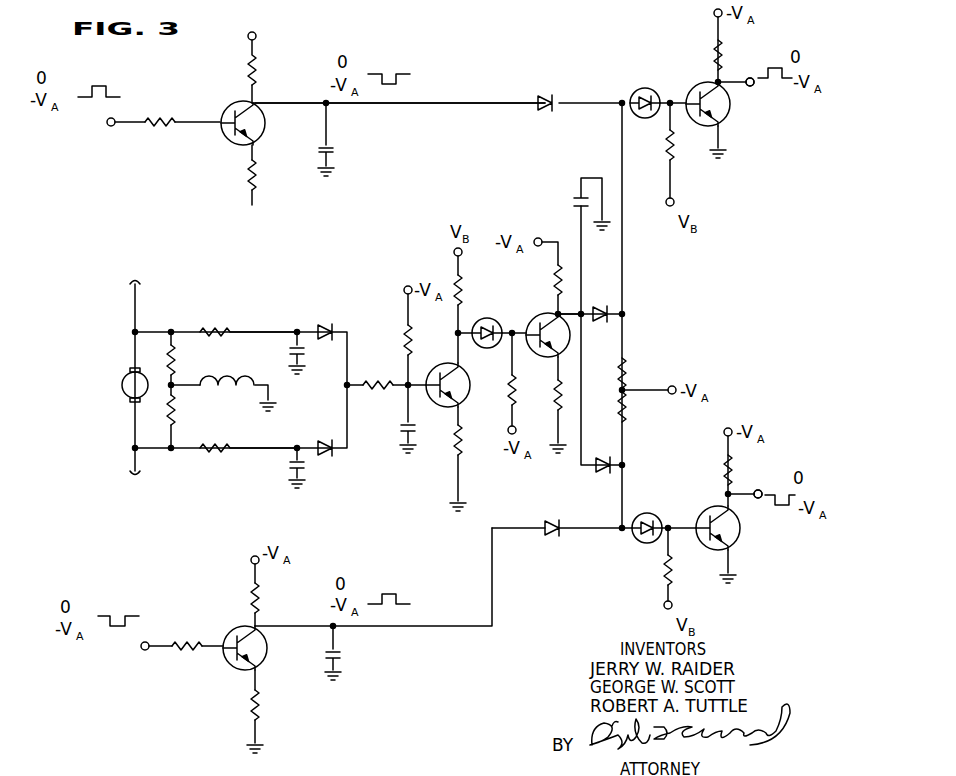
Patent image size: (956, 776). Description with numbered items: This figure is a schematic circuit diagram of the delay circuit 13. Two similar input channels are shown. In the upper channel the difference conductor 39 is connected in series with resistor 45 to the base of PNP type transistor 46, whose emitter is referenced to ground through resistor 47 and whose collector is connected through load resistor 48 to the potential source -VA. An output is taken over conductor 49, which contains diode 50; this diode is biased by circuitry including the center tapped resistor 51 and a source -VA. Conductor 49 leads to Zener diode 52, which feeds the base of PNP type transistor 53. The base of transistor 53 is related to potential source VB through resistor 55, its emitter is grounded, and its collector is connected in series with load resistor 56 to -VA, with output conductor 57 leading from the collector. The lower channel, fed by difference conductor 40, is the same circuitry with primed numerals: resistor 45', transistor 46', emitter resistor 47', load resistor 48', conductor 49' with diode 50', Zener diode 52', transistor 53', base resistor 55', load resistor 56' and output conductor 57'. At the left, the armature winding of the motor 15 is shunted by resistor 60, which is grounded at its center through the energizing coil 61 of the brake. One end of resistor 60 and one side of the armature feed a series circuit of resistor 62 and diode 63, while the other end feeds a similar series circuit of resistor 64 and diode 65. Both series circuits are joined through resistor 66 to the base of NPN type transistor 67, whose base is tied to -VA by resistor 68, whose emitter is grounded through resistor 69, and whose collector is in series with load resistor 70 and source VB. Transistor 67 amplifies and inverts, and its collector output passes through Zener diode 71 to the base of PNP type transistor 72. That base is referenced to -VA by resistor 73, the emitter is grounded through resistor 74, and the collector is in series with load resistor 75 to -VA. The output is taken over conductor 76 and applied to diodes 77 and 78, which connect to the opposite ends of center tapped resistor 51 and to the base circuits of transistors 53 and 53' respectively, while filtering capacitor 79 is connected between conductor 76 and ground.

The pulse driving circuit 13 is at (452, 50).
The motor 15 is at (124, 378).
The difference conductor 39 is at (108, 126).
The difference conductor 40 is at (141, 650).
The resistor 45 is at (162, 104).
The resistor 45' is at (170, 672).
The PNP type transistor 46 is at (260, 123).
The PNP type transistor 46' is at (234, 661).
The resistor 47 is at (235, 175).
The resistor 47' is at (279, 706).
The load resistor 48 is at (273, 52).
The load resistor 48' is at (236, 593).
The conductor 49 is at (399, 87).
The conductor 49' is at (392, 577).
The diode 50 is at (544, 88).
The diode 50' is at (545, 544).
The center tapped resistor 51 is at (628, 374).
The Zener diode 52 is at (644, 120).
The Zener diode 52' is at (650, 511).
The PNP type transistor 53 is at (693, 97).
The PNP type transistor 53' is at (737, 532).
The resistor 55 is at (650, 162).
The resistor 55' is at (646, 578).
The load resistor 56 is at (700, 39).
The load resistor 56' is at (711, 460).
The output conductor 57 is at (753, 100).
The output conductor 57' is at (769, 477).
The resistor 60 is at (176, 360).
The energizing coil 61 is at (226, 376).
The resistor 62 is at (214, 326).
The diode 63 is at (327, 324).
The resistor 64 is at (218, 455).
The diode 65 is at (332, 456).
The resistor 66 is at (370, 382).
The NPN type transistor 67 is at (462, 380).
The resistor 68 is at (405, 330).
The resistor 69 is at (455, 452).
The load resistor 70 is at (462, 288).
The Zener diode 71 is at (484, 320).
The PNP type transistor 72 is at (544, 314).
The resistor 73 is at (515, 390).
The resistor 74 is at (563, 386).
The load resistor 75 is at (564, 286).
The output conductor 76 is at (568, 313).
The diode 77 is at (608, 308).
The diode 78 is at (612, 460).
The filtering capacitor 79 is at (578, 196).